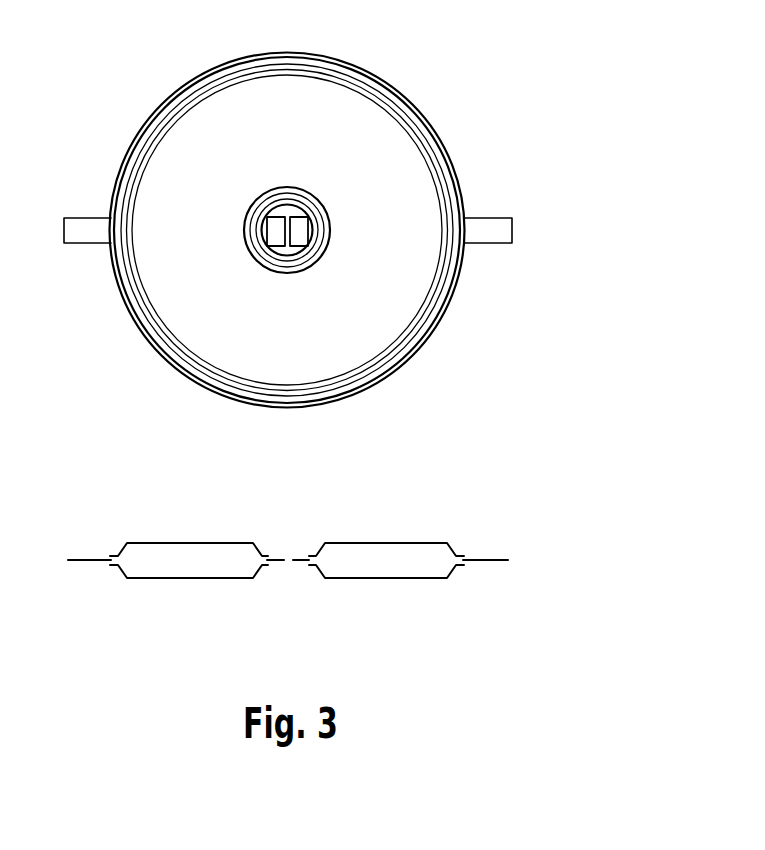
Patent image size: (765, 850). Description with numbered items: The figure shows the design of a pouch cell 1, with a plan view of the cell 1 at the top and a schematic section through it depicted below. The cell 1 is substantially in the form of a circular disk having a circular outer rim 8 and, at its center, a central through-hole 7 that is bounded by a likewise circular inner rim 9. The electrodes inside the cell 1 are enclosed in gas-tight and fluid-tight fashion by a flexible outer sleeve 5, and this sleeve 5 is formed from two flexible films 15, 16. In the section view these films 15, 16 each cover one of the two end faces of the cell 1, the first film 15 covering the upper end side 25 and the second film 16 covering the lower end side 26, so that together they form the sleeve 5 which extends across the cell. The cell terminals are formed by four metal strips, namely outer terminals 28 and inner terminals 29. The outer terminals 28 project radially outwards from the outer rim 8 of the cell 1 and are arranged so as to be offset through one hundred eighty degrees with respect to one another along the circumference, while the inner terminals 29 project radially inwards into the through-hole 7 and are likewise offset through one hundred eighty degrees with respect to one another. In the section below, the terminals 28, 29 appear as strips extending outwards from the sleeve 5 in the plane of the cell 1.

The pouch cell 1 is at (561, 81).
The flexible outer sleeve 5 is at (168, 194).
The central through-hole 7 is at (286, 218).
The outer rim 8 is at (109, 278).
The inner rim 9 is at (322, 252).
The film 15 is at (286, 510).
The film 16 is at (286, 610).
The upper end side 25 is at (186, 542).
The lower end side 26 is at (186, 578).
The outer terminal 28 is at (512, 225).
The inner terminal 29 is at (286, 337).